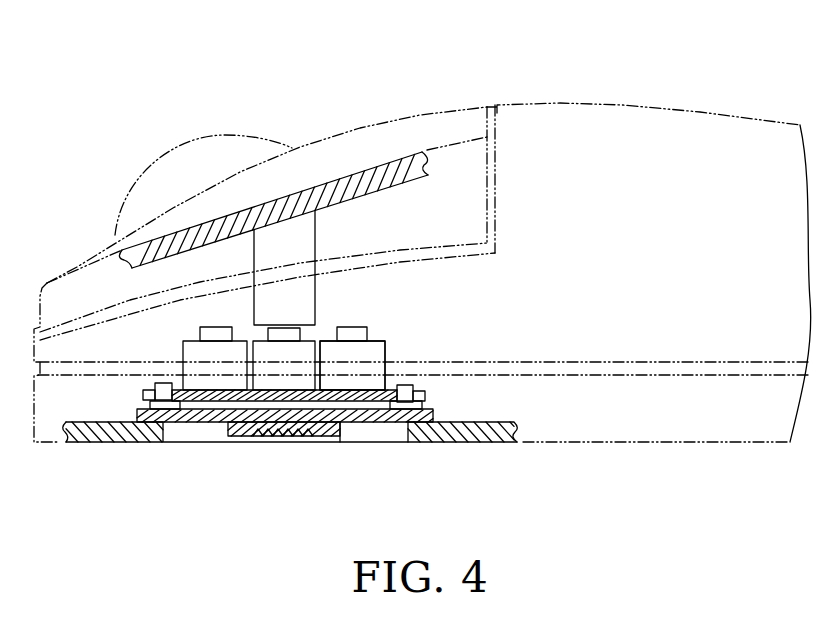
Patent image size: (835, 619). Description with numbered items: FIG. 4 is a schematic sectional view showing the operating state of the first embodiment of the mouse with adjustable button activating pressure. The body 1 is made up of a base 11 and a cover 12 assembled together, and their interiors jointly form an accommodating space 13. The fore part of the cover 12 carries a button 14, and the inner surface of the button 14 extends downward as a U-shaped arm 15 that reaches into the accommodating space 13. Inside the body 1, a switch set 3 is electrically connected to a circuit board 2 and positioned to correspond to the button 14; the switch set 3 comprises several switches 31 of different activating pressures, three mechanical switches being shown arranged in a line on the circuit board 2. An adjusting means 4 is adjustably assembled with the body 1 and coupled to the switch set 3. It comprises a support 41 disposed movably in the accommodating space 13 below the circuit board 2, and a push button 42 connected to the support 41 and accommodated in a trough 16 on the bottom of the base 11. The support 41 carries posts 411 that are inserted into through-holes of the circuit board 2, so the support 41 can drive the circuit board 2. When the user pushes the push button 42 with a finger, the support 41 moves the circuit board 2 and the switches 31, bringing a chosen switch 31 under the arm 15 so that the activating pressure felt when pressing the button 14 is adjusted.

The body 1 is at (623, 105).
The base 11 is at (688, 428).
The cover 12 is at (715, 126).
The accommodating space 13 is at (608, 279).
The button 14 is at (357, 172).
The arm 15 is at (300, 242).
The circuit board 2 is at (427, 395).
The switch set 3 is at (387, 343).
The switch 31 is at (350, 347).
The adjusting means 4 is at (220, 422).
The support 41 is at (363, 423).
The post 411 is at (155, 389).
The push button 42 is at (292, 437).
The trough 16 is at (387, 437).